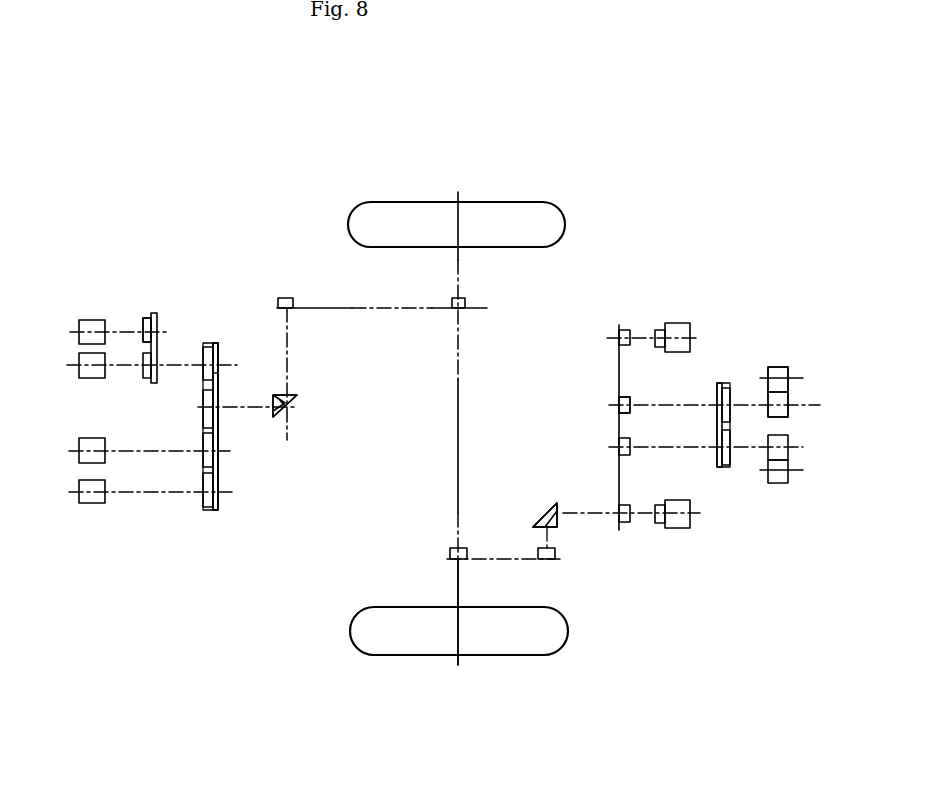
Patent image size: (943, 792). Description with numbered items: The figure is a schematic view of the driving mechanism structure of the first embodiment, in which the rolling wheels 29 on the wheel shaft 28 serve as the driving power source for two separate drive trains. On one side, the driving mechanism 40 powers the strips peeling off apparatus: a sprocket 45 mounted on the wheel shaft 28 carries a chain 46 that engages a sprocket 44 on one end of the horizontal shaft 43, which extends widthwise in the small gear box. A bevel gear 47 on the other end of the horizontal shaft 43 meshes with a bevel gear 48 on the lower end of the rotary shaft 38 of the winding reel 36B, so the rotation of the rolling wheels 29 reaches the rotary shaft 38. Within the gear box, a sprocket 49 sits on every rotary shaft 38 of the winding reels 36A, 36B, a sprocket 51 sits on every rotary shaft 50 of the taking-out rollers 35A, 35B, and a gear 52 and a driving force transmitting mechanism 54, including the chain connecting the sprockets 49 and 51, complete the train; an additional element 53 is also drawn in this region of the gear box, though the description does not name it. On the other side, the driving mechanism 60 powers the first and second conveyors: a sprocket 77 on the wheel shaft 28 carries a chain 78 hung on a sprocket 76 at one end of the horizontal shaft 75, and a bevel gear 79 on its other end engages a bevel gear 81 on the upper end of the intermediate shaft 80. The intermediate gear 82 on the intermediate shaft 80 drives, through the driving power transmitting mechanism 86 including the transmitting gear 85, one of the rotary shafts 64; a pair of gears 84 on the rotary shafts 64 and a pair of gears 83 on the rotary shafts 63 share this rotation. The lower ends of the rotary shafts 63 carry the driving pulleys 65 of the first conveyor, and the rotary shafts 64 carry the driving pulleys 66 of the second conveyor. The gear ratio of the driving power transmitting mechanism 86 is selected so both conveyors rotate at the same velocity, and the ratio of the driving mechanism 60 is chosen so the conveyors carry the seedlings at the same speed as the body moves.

The wheel shaft 28 is at (454, 357).
The rolling wheels 29 is at (523, 213).
The taking-out roller 35A is at (783, 367).
The taking-out roller 35B is at (790, 483).
The winding reel 36A is at (688, 325).
The winding reel 36B is at (683, 527).
The rotary shaft 38 is at (598, 517).
The driving mechanism 40 is at (766, 255).
The horizontal shaft 43 is at (557, 562).
The sprocket 44 is at (557, 563).
The sprocket 45 is at (447, 559).
The chain 46 is at (483, 559).
The bevel gear 47 is at (535, 505).
The bevel gear 48 is at (548, 503).
The sprocket 49 is at (624, 330).
The rotary shaft 50 is at (680, 443).
The sprocket 51 is at (619, 447).
The gear 52 is at (737, 442).
The bearing 53 is at (617, 397).
The driving force transmitting mechanism 54 is at (738, 494).
The driving mechanism 60 is at (196, 212).
The rotary shafts 63 is at (158, 493).
The rotary shafts 64 is at (137, 367).
The driving pulleys 65 is at (78, 465).
The driving pulleys 66 is at (78, 366).
The horizontal shaft 75 is at (288, 350).
The sprocket 76 is at (280, 298).
The sprocket 77 is at (470, 305).
The chain 78 is at (327, 308).
The bevel gear 79 is at (275, 395).
The intermediate shaft 80 is at (257, 410).
The bevel gear 81 is at (290, 420).
The intermediate gear 82 is at (200, 432).
The gears 83 is at (213, 513).
The gears 84 is at (147, 318).
The transmitting gear 85 is at (210, 343).
The driving power transmitting mechanism 86 is at (249, 533).